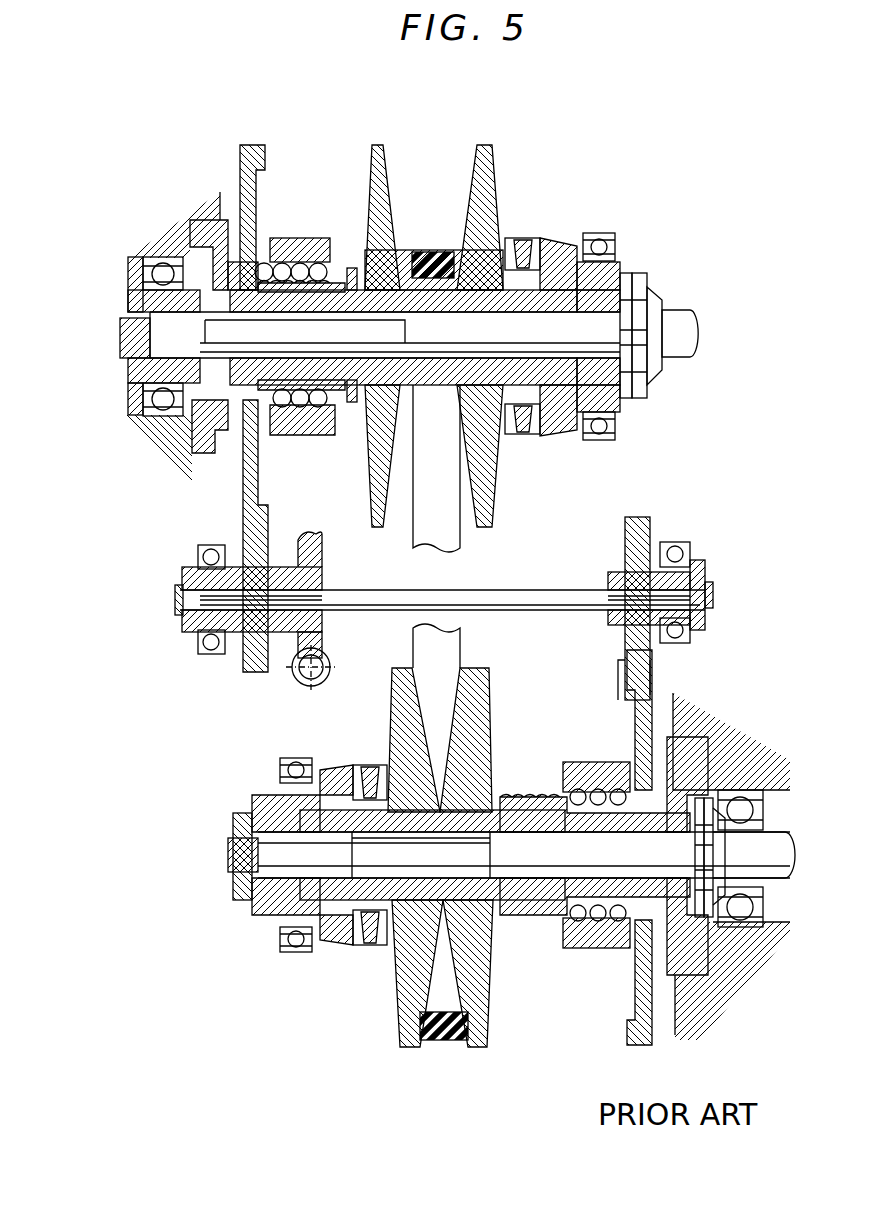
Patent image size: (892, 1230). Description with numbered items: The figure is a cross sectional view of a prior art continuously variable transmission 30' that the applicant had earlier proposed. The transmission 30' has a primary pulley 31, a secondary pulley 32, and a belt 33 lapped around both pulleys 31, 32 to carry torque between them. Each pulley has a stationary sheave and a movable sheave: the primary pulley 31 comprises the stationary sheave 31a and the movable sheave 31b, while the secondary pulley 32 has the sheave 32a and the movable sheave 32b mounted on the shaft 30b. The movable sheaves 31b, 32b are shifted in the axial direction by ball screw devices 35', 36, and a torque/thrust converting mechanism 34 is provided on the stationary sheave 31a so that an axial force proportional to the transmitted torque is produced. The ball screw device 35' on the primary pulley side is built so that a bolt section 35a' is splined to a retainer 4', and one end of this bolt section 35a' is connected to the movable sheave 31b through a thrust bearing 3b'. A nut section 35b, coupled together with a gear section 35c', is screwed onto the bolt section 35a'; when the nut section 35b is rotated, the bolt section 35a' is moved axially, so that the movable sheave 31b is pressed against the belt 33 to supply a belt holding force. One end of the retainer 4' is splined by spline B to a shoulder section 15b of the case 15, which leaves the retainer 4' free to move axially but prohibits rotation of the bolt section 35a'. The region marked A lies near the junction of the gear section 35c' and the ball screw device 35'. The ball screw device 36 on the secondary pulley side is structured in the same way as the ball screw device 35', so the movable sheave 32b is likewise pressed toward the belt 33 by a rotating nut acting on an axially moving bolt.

The continuously variable transmission 30' is at (409, 236).
The gear section 35c' is at (264, 191).
The movable sheave 31b is at (366, 166).
The stationary sheave 31a is at (492, 150).
The primary pulley 31 is at (338, 178).
The torque/thrust converting mechanism 34 is at (547, 228).
The shaft 30b is at (593, 338).
The point A is at (262, 270).
The spline B is at (206, 262).
The case 15 is at (160, 237).
The retainer 4' is at (158, 467).
The shoulder section 15b is at (213, 442).
The ball screw device 35' is at (291, 293).
The nut section 35b is at (310, 236).
The bolt section 35a' is at (316, 301).
The thrust bearing 3b' is at (350, 371).
The secondary pulley 32 is at (497, 708).
The pulley flange 32a is at (398, 1012).
The movable sheave 32b is at (490, 1012).
The belt 33 is at (452, 1043).
The ball screw device 36 is at (566, 756).